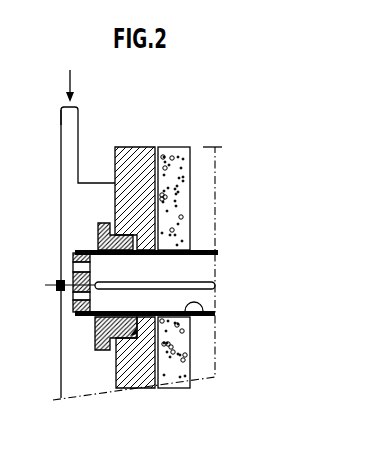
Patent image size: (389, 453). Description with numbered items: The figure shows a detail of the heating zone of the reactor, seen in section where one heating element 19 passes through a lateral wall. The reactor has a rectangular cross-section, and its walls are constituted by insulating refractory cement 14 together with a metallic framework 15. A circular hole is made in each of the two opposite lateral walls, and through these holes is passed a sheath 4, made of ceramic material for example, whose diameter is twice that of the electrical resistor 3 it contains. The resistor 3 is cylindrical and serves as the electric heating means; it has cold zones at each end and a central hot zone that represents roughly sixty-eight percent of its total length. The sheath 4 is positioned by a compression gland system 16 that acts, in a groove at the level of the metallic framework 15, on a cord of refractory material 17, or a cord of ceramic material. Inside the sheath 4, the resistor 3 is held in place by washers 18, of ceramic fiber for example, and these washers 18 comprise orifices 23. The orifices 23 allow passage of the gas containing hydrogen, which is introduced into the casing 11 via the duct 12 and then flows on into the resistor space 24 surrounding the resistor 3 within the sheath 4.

The resistor 3 is at (210, 292).
The sheath 4 is at (212, 292).
The casing 11 is at (60, 195).
The duct 12 is at (72, 125).
The insulating refractory cement 14 is at (181, 367).
The metallic framework 15 is at (137, 367).
The compression gland system 16 is at (97, 237).
The cord of refractory material 17 is at (133, 333).
The washer 18 is at (75, 307).
The heating element 19 is at (200, 250).
The orifice 23 is at (73, 299).
The resistor space 24 is at (198, 270).